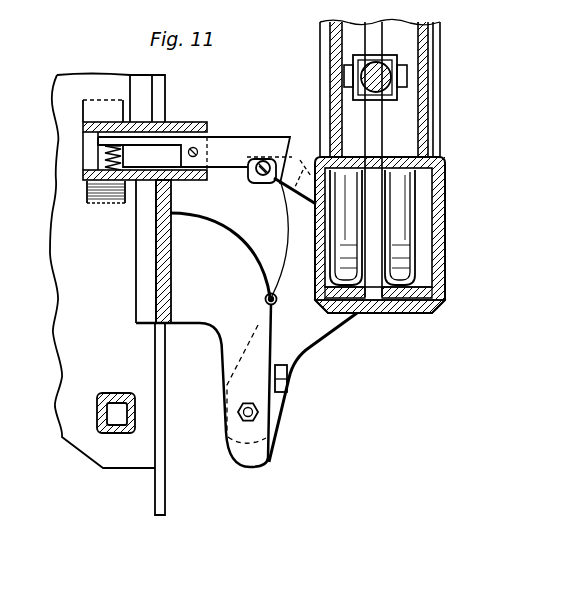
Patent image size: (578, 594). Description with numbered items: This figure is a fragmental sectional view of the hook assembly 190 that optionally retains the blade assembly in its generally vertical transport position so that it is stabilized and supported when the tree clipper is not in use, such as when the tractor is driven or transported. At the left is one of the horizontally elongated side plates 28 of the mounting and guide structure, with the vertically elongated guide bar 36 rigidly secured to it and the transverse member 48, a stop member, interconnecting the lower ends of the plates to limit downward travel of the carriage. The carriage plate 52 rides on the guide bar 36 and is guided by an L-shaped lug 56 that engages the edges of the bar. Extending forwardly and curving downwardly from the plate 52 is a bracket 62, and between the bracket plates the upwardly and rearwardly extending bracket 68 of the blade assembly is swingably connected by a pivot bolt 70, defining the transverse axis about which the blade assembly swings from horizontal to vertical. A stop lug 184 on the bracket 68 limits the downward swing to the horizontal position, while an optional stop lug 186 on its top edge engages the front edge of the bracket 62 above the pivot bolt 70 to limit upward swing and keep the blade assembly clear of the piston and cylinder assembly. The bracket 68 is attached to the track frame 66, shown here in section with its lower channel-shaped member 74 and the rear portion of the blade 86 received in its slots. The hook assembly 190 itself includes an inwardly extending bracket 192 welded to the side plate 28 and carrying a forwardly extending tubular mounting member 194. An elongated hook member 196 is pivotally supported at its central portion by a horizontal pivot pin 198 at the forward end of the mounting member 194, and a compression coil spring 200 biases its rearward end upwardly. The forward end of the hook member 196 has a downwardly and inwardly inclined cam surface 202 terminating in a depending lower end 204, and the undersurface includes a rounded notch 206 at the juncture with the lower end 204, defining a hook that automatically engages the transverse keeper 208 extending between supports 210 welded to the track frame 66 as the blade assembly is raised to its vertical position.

The side plate 28 is at (67, 273).
The guide bar 36 is at (156, 500).
The transverse member 48 is at (110, 437).
The plate 52 is at (157, 298).
The L-shaped lug 56 is at (145, 278).
The bracket 62 is at (260, 457).
The track frame 66 is at (450, 152).
The bracket 68 is at (323, 323).
The pivot bolt 70 is at (257, 413).
The lower channel-shaped member 74 is at (437, 257).
The blade 86 is at (372, 40).
The stop lug 184 is at (286, 382).
The stop lug 186 is at (273, 303).
The hook assembly 190 is at (113, 208).
The bracket 192 is at (98, 115).
The tubular mounting member 194 is at (170, 121).
The hook member 196 is at (216, 136).
The pivot pin 198 is at (186, 167).
The compression coil spring 200 is at (106, 160).
The cam surface 202 is at (297, 155).
The depending lower end 204 is at (282, 205).
The rounded notch 206 is at (258, 160).
The keeper 208 is at (267, 181).
The keeper supports 210 is at (241, 295).